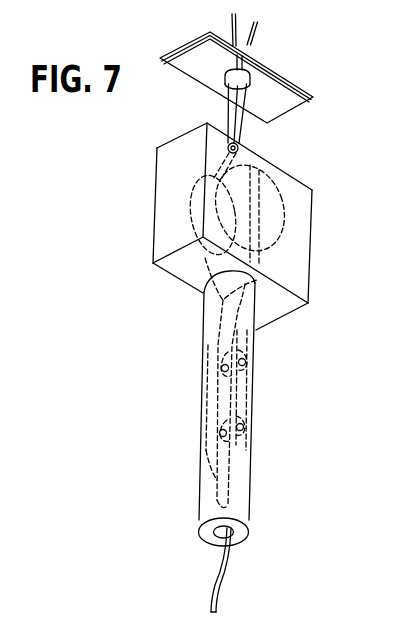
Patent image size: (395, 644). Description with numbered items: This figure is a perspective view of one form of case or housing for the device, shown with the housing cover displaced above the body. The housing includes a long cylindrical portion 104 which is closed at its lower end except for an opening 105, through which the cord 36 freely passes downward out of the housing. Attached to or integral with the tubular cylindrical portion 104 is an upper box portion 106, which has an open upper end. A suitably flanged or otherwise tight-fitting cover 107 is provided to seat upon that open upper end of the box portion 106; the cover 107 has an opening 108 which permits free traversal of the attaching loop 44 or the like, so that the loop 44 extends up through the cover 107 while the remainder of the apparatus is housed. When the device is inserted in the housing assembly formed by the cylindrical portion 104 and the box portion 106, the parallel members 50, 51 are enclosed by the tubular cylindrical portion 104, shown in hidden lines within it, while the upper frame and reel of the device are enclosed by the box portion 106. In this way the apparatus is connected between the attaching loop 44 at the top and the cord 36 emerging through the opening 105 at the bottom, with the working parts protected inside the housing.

The attaching loop 44 is at (255, 37).
The cover 107 is at (288, 105).
The opening 108 is at (250, 78).
The box portion 106 is at (302, 245).
The cylindrical portion 104 is at (240, 493).
The parallel member 50 is at (212, 405).
The parallel member 51 is at (245, 402).
The opening 105 is at (237, 535).
The cord 36 is at (218, 592).